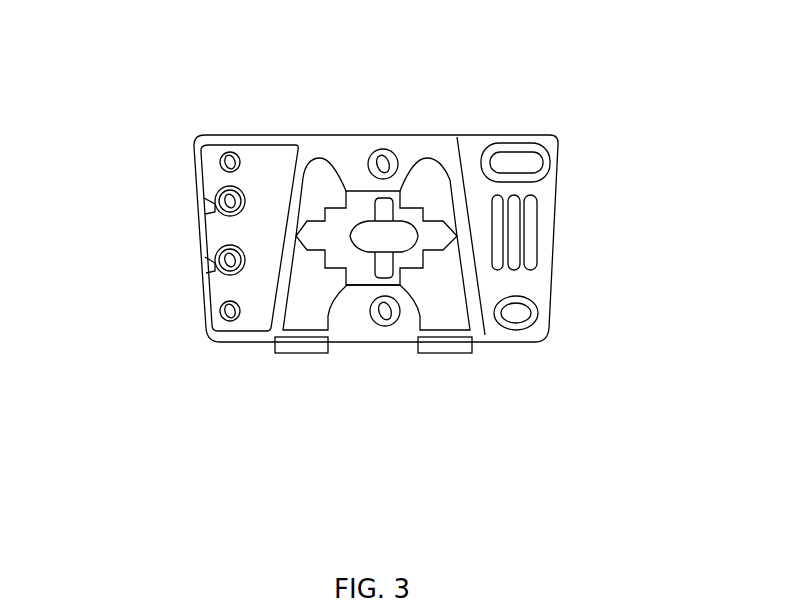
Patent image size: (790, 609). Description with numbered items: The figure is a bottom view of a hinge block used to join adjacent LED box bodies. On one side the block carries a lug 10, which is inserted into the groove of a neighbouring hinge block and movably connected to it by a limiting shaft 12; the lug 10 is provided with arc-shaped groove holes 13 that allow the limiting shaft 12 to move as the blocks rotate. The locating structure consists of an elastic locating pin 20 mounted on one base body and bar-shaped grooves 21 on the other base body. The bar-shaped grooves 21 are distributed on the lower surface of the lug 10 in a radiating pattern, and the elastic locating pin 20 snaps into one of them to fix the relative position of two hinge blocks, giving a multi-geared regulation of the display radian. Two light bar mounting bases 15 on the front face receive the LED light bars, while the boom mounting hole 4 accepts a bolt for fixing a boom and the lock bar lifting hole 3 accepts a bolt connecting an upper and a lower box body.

The lock bar lifting hole 3 is at (360, 225).
The boom mounting hole 4 is at (382, 153).
The lug 10 is at (468, 190).
The limiting shaft 12 is at (213, 331).
The arc-shaped groove hole 13 is at (553, 197).
The light bar mounting base 15 is at (297, 349).
The elastic locating pin 20 is at (207, 274).
The bar-shaped groove 21 is at (512, 183).